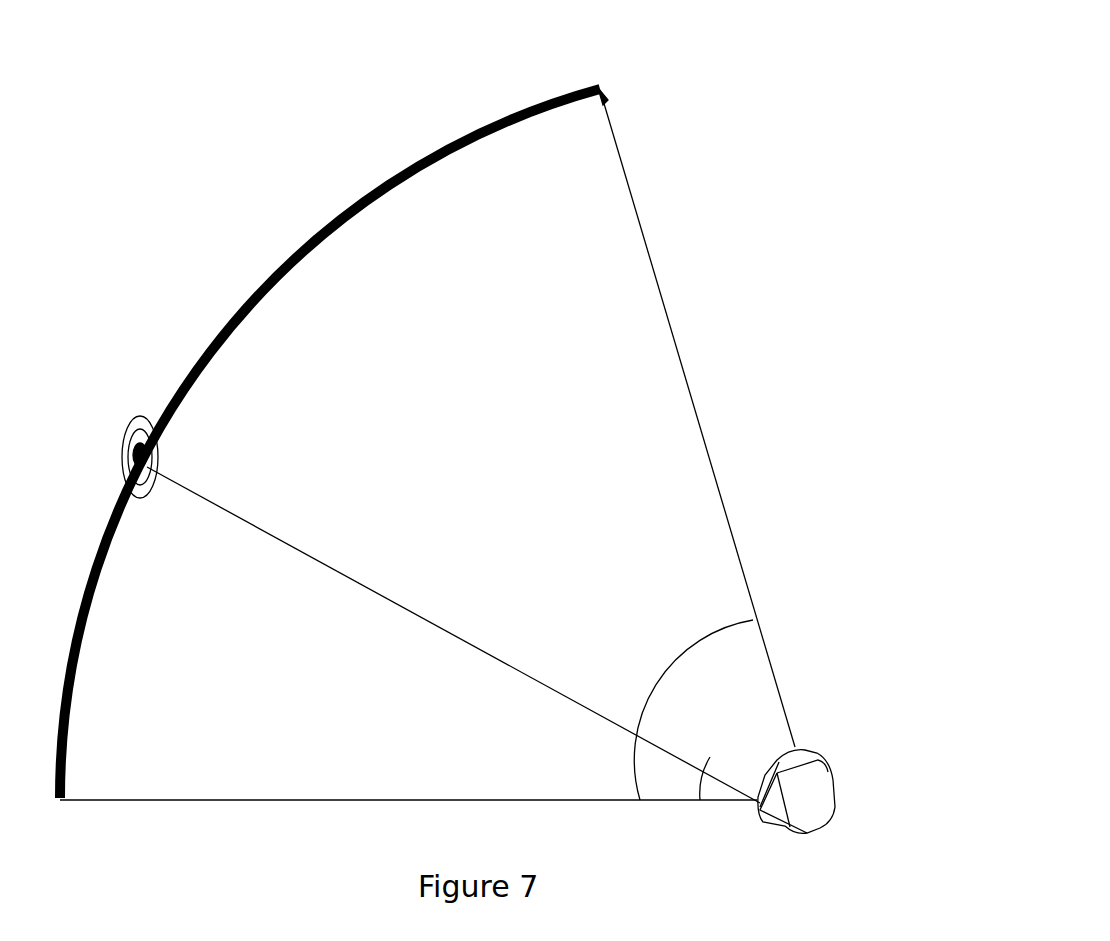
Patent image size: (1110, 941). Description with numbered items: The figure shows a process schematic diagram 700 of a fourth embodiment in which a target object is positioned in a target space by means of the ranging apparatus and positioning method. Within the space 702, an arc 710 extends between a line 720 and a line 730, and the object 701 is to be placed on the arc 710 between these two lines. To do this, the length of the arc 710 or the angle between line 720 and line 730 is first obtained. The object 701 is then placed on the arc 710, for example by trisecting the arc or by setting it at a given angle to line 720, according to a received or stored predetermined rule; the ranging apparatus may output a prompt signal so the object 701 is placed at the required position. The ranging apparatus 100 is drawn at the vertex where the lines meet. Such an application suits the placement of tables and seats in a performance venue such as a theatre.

The process schematic diagram 700 is at (762, 25).
The arc 710 is at (420, 163).
The line 720 is at (315, 803).
The line 730 is at (717, 470).
The object 701 is at (147, 415).
The space 702 is at (522, 446).
The device 100 is at (815, 752).